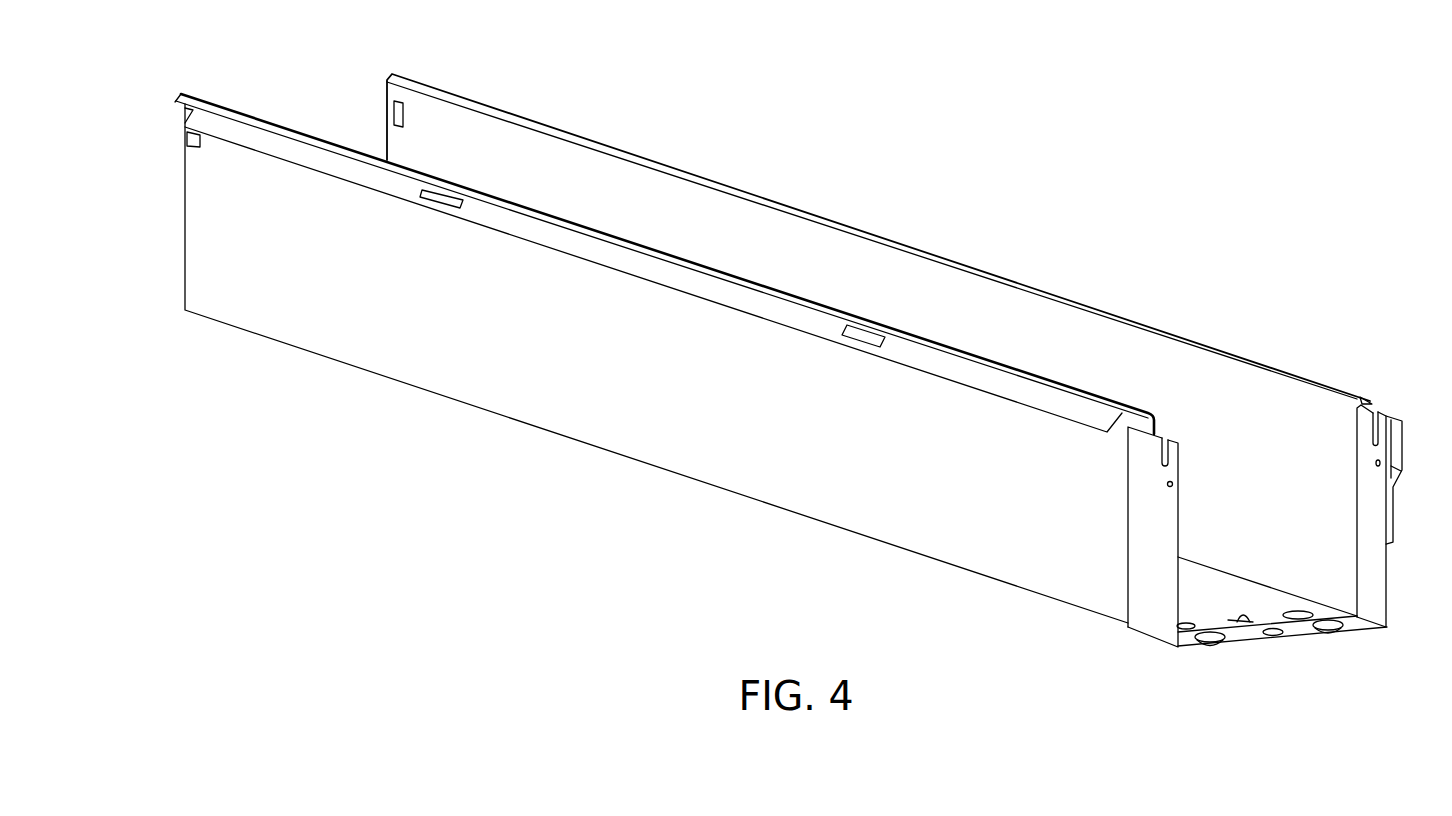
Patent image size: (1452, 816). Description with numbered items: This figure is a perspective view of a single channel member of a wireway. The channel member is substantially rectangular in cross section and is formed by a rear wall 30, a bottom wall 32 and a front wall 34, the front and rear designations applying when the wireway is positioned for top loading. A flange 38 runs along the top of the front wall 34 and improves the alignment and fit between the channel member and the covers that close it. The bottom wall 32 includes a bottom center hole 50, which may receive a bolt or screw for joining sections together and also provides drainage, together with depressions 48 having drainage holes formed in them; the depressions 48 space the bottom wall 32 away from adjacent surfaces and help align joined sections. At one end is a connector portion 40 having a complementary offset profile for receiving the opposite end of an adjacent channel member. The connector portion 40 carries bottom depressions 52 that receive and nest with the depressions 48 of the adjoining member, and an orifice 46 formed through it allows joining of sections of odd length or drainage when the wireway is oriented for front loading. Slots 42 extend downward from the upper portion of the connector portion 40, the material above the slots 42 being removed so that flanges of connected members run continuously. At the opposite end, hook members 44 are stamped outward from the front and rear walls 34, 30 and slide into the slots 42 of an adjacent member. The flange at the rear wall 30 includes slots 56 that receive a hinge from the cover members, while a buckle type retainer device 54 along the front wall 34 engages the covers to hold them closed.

The rear wall 30 is at (682, 395).
The bottom wall 32 is at (1185, 592).
The front wall 34 is at (1025, 342).
The flange 38 is at (1370, 401).
The connector portion 40 is at (1152, 634).
The slots 42 is at (1165, 438).
The hook members 44 is at (187, 139).
The orifice 46 is at (1174, 485).
The depressions 48 is at (1187, 624).
The bottom center hole 50 is at (1255, 623).
The bottom depressions 52 is at (1212, 645).
The buckle type retainer device 54 is at (1402, 446).
The slots 56 is at (443, 193).